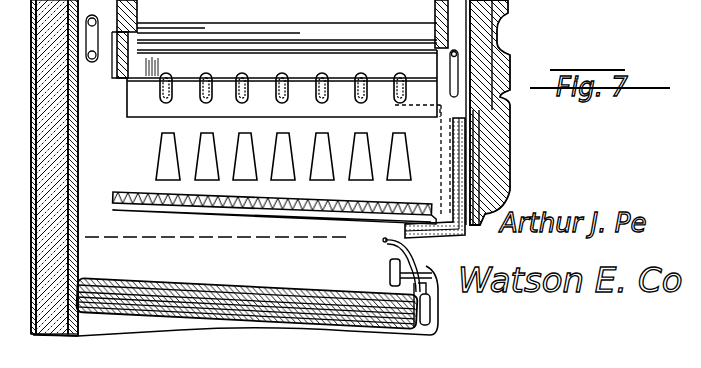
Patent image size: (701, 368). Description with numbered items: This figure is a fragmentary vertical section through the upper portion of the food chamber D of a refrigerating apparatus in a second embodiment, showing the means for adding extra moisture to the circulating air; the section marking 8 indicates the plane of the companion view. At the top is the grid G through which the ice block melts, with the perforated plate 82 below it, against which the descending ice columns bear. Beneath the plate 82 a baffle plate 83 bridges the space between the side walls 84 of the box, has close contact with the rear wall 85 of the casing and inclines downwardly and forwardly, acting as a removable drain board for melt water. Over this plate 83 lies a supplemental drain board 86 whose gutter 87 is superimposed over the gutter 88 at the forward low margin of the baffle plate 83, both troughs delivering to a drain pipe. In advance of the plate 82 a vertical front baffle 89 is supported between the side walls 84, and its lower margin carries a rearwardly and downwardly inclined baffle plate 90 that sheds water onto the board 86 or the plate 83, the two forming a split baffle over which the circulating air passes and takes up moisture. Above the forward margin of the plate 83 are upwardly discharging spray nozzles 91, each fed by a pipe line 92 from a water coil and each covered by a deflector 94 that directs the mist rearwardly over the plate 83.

The rear wall 85 is at (72, 162).
The front baffle 89 is at (467, 125).
The side walls 84 is at (495, 113).
The perforated plate 82 is at (228, 200).
The supplemental drain board 86 is at (235, 295).
The baffle plate 83 is at (246, 296).
The gutter 88 is at (352, 300).
The inclined baffle plate 90 is at (425, 224).
The pipe line 92 is at (396, 232).
The deflector 94 is at (386, 255).
The spray nozzles 91 is at (390, 269).
The gutter 87 is at (437, 280).
The section line 8- 8 is at (24, 243).
The grid G is at (156, 92).
The food chamber D is at (112, 324).